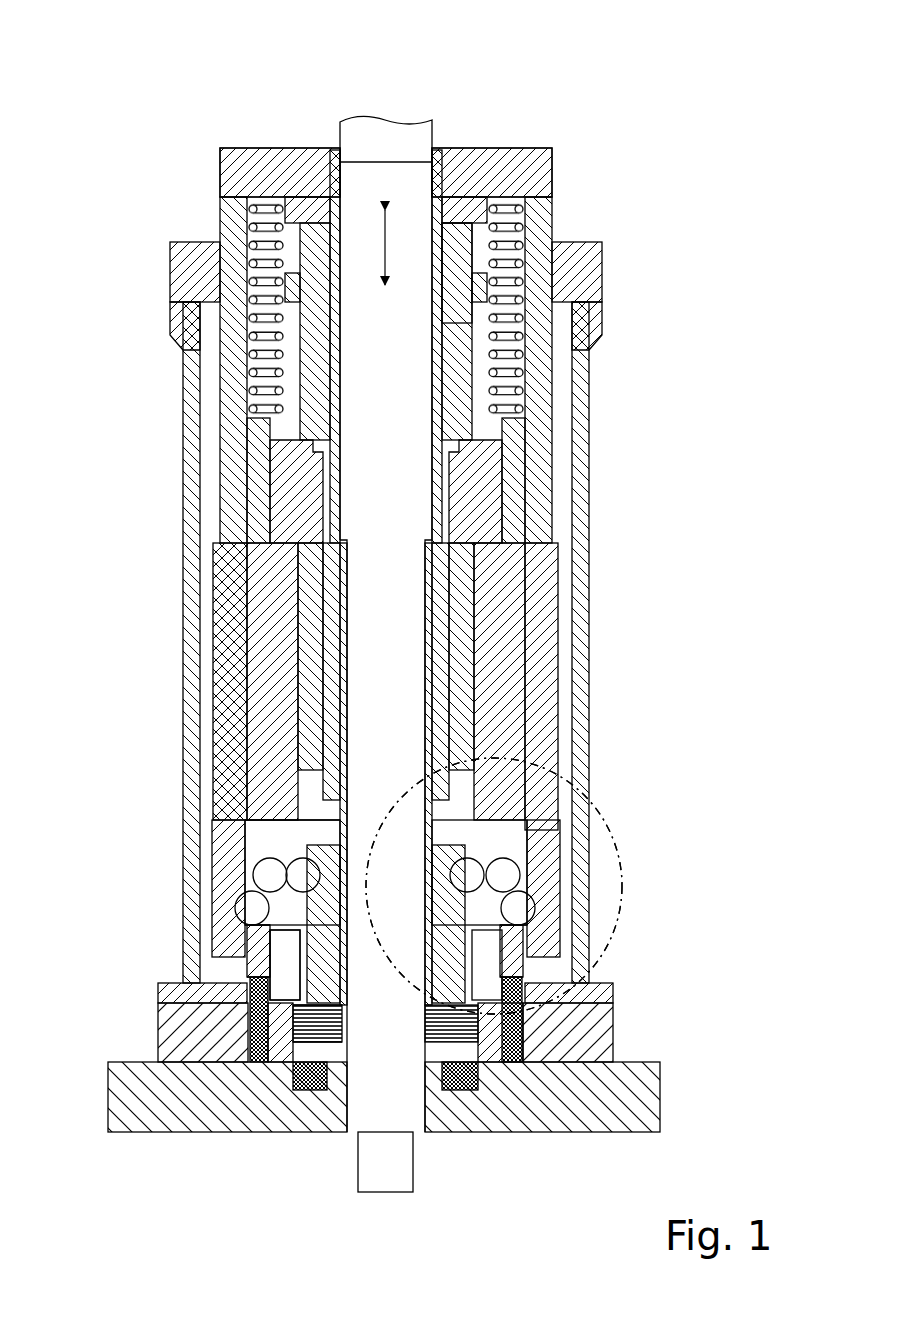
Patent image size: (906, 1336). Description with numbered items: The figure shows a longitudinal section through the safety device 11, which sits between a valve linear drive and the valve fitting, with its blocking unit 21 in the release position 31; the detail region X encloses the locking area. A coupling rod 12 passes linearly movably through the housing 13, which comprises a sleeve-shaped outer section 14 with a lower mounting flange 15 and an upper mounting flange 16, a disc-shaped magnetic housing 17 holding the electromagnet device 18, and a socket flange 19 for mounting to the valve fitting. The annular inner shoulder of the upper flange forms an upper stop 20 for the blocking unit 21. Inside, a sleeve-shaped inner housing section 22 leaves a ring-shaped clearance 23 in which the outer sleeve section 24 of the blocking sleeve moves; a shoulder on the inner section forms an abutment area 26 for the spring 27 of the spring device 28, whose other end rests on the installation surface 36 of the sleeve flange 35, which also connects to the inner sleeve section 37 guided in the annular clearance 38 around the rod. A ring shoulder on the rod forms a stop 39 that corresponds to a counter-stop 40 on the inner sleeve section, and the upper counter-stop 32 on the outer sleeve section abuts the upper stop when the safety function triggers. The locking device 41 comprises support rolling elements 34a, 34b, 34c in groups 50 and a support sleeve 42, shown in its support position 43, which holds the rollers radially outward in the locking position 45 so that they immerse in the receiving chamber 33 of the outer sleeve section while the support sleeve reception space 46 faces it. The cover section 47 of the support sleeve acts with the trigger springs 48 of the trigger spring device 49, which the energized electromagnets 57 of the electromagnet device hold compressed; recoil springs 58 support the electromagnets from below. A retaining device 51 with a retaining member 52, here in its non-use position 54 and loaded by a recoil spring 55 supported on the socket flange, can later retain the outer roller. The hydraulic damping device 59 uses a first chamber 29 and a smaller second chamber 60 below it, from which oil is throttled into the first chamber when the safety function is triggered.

The safety device 11 is at (394, 98).
The coupling rod 12 is at (365, 330).
The housing 13 is at (588, 878).
The sleeve-shaped outer section 14 is at (580, 585).
The lower mounting flange 15 is at (165, 990).
The upper mounting flange 16 is at (575, 270).
The magnetic housing 17 is at (172, 1028).
The electromagnet device 18 is at (310, 1075).
The socket flange 19 is at (522, 1100).
The upper stop 20 is at (195, 312).
The blocking unit 21 is at (238, 160).
The inner housing section 22 is at (262, 585).
The ring-shaped clearance 23 is at (205, 385).
The outer sleeve section 24 is at (225, 655).
The abutment area 26 is at (255, 415).
The spring 27 is at (520, 335).
The spring device 28 is at (520, 432).
The chamber 29 is at (462, 298).
The release position 31 is at (489, 98).
The upper counter-stop 32 is at (557, 530).
The receiving chamber 33 is at (238, 872).
The support rolling element 34a is at (470, 878).
The support rolling element 34b is at (503, 878).
The support rolling element 34c is at (520, 908).
The sleeve flange 35 is at (288, 172).
The installation surface 36 is at (490, 245).
The inner sleeve section 37 is at (452, 715).
The annular clearance 38 is at (345, 820).
The stop 39 is at (345, 540).
The counter-stop 40 is at (345, 775).
The locking device 41 is at (300, 975).
The support sleeve 42 is at (565, 1025).
The support position 43 is at (482, 968).
The locking position 45 is at (228, 895).
The support sleeve reception space 46 is at (280, 897).
The cover section 47 is at (255, 1065).
The trigger spring 48 is at (435, 1060).
The trigger spring device 49 is at (322, 1088).
The support rolling element group 50 is at (262, 845).
The retaining device 51 is at (465, 1088).
The retaining member 52 is at (520, 945).
The non-use position 54 is at (537, 985).
The recoil spring 55 is at (512, 1060).
The electromagnet 57 is at (305, 1045).
The recoil spring 58 is at (315, 1040).
The damping device 59 is at (462, 378).
The second chamber 60 is at (448, 595).
The detail region X is at (600, 802).